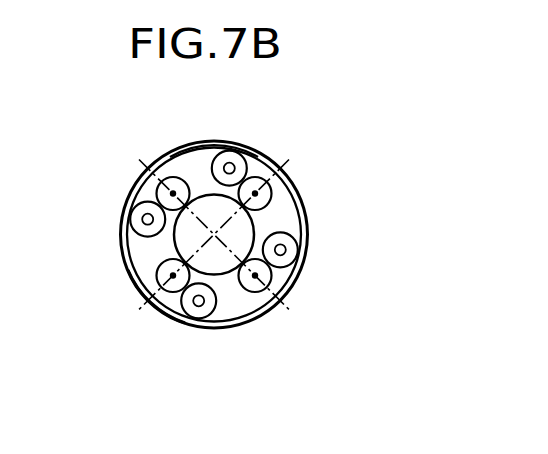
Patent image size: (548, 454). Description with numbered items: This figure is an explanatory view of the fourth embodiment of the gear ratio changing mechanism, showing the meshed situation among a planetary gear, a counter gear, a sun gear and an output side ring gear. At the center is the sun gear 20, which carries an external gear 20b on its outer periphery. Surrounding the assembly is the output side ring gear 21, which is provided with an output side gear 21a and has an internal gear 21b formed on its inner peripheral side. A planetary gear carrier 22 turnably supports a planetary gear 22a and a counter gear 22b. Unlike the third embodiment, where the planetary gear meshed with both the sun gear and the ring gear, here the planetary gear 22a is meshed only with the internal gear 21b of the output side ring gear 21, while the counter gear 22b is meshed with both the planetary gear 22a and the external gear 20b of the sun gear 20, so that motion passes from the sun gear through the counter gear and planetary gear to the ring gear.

The sun gear 20 is at (245, 221).
The external gear 20b is at (242, 218).
The output side ring gear 21 is at (173, 152).
The output side gear 21a is at (215, 146).
The internal gear 21b is at (226, 147).
The planetary gear carrier 22 is at (133, 277).
The planetary gear 22a is at (212, 313).
The counter gear 22b is at (162, 310).